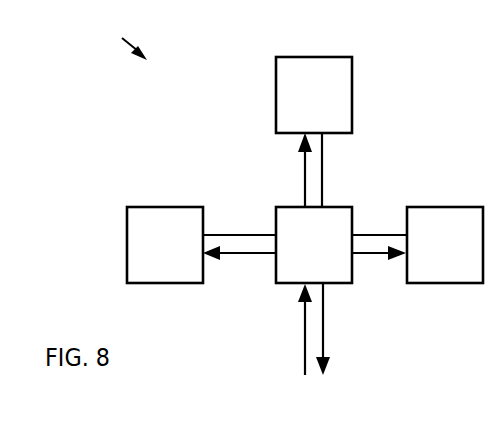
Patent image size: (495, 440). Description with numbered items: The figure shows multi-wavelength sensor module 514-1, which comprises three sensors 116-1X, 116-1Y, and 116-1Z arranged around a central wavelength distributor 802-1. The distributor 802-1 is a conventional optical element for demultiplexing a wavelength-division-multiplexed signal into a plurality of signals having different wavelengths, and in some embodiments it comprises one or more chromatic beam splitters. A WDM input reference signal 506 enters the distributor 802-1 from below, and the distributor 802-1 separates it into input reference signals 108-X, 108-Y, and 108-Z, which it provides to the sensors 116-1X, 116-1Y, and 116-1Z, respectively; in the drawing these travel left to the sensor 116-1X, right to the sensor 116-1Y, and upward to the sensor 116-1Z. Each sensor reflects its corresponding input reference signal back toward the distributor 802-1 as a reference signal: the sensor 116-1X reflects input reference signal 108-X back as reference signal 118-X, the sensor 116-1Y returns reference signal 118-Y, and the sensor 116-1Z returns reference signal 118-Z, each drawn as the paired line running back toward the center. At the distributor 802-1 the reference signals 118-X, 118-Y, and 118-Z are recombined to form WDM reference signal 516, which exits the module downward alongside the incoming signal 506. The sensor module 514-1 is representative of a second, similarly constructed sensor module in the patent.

The multi-wavelength sensor module 514-1 is at (114, 35).
The sensor 116-1Z is at (347, 106).
The sensor 116-1X is at (197, 256).
The sensor 116-1Y is at (477, 256).
The wavelength distributor 802-1 is at (340, 256).
The input reference signal 108-Z is at (305, 187).
The reference signal 118-Z is at (323, 187).
The reference signal 118-X is at (248, 244).
The input reference signal 108-X is at (248, 244).
The reference signal 118-Y is at (380, 244).
The input reference signal 108-Y is at (380, 244).
The WDM input reference signal 506 is at (303, 337).
The WDM reference signal 516 is at (325, 338).